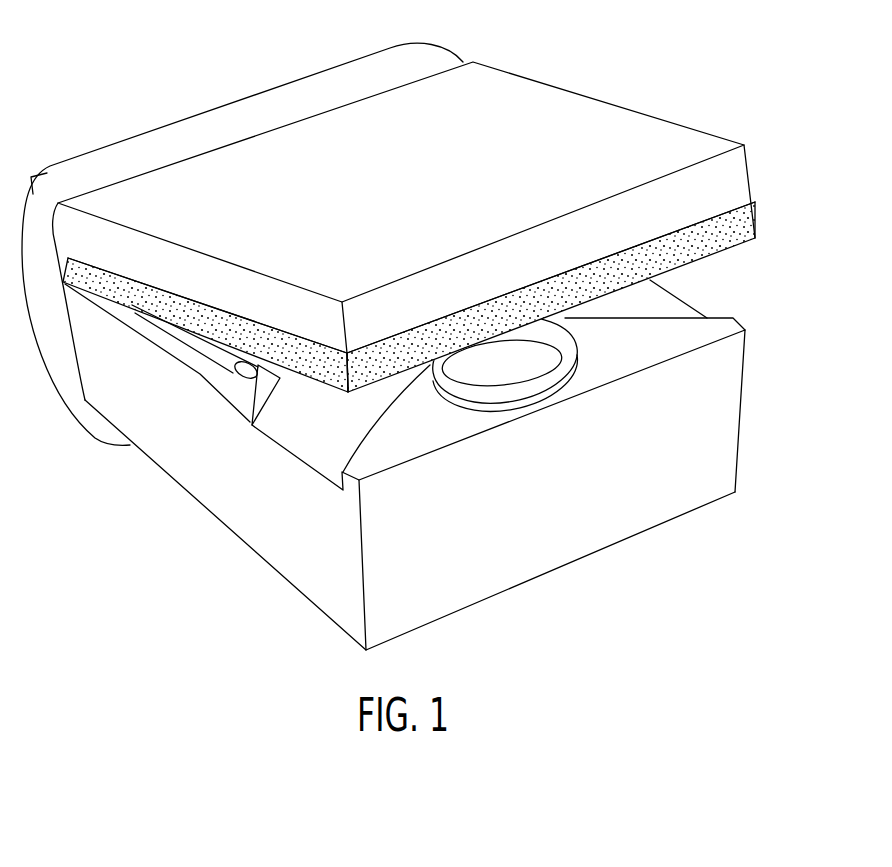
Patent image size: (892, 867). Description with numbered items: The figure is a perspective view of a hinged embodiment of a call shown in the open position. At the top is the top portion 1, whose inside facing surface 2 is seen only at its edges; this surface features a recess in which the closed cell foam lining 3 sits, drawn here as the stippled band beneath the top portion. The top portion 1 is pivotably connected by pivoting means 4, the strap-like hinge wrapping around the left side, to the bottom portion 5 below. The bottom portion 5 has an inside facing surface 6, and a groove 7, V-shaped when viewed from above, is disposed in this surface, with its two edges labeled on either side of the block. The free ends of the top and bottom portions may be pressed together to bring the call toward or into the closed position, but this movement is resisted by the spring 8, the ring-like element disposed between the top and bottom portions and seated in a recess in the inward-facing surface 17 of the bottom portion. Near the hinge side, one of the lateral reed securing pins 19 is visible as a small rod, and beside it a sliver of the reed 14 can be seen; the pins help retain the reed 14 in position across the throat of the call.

The top portion 1 is at (282, 283).
The inside facing surface 2 is at (173, 297).
The closed cell foam lining 3 is at (743, 217).
The pivoting means 4 is at (50, 373).
The bottom portion 5 is at (248, 537).
The inside facing surface 6 is at (650, 357).
The groove 7 is at (660, 303).
The spring 8 is at (535, 378).
The reed 14 is at (270, 380).
The inward-facing surface 17 is at (212, 380).
The lateral reed securing pins 19 is at (190, 347).